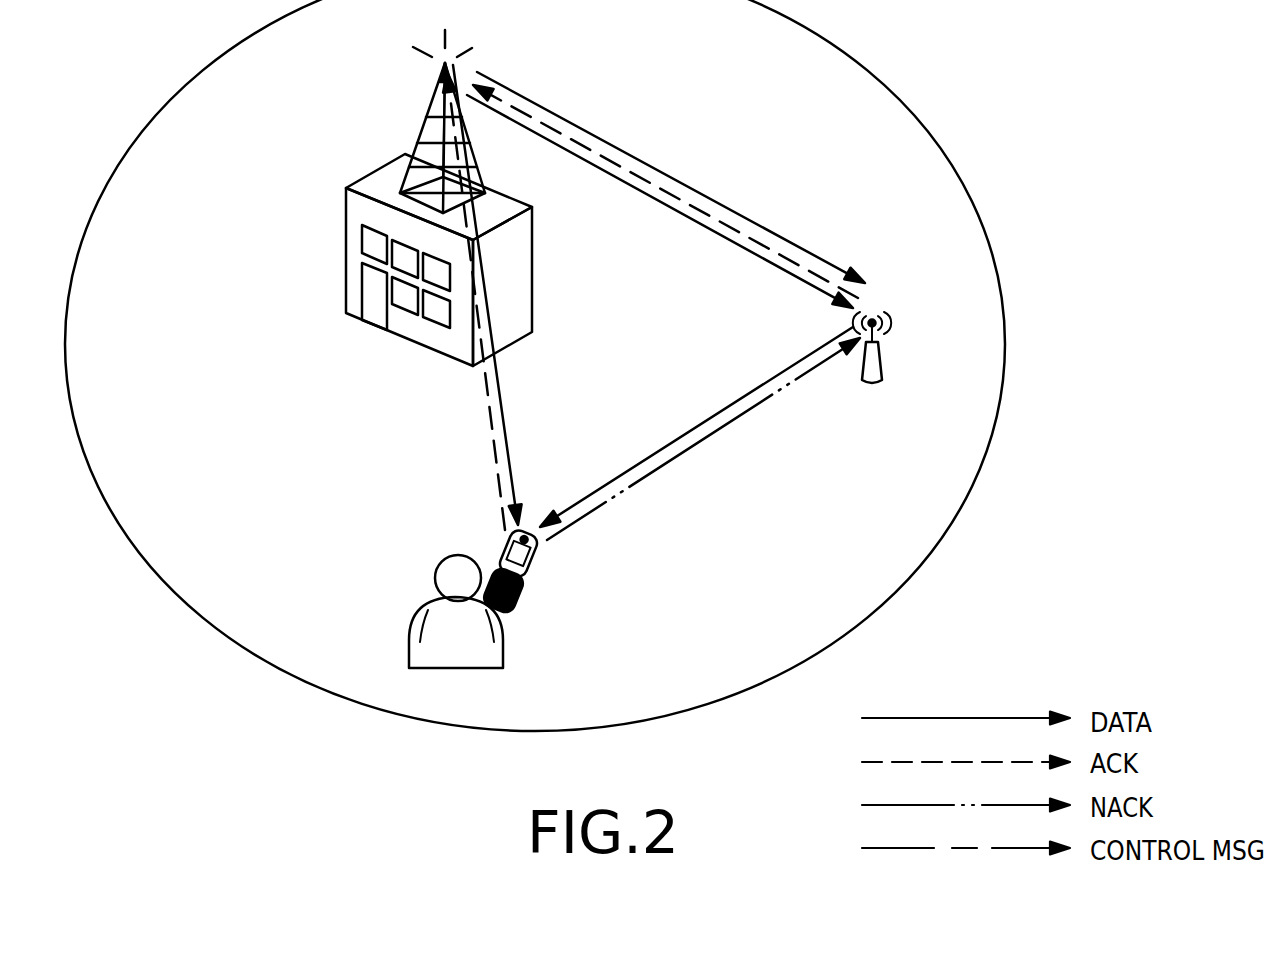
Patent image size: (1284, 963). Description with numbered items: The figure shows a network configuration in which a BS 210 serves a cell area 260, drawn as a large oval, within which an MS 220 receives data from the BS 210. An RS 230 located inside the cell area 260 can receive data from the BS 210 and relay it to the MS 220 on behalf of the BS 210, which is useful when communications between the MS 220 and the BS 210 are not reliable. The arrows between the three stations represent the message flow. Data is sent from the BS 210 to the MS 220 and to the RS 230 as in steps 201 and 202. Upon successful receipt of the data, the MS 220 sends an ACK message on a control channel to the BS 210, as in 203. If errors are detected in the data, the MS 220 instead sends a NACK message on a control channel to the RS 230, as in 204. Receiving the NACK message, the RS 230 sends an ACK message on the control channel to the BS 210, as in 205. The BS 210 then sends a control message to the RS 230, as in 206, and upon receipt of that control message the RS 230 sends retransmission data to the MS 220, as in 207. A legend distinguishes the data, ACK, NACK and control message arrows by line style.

The data transmission step 201 is at (500, 396).
The data transmission step 202 is at (657, 201).
The ACK message transmission 203 is at (491, 424).
The NACK message transmission 204 is at (697, 443).
The ACK message transmission 205 is at (723, 223).
The control message transmission 206 is at (670, 177).
The retransmission data transmission 207 is at (693, 429).
The BS 210 is at (420, 133).
The MS 220 is at (435, 584).
The RS 230 is at (873, 386).
The cell area 260 is at (1003, 343).